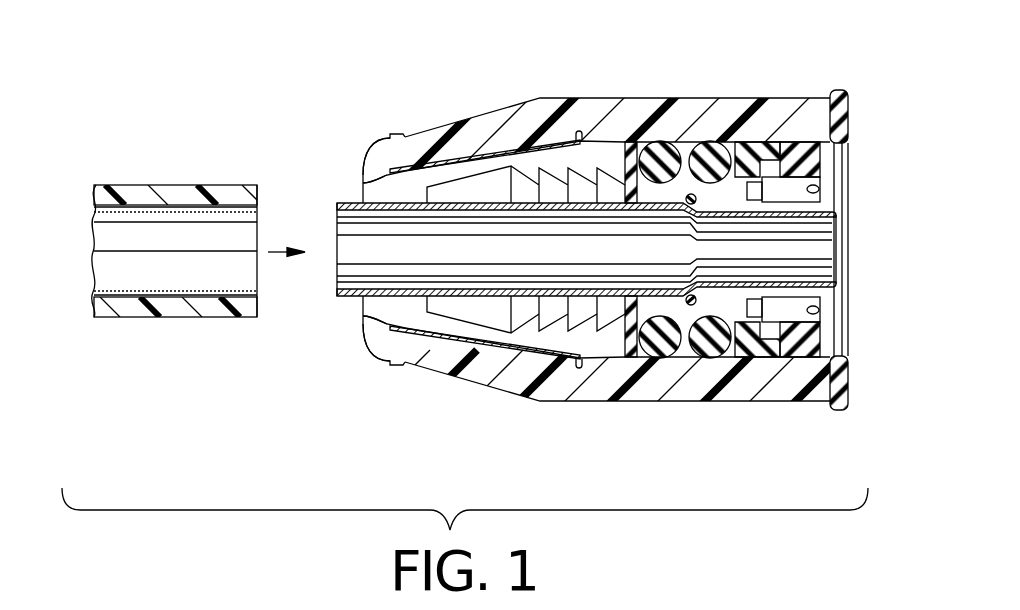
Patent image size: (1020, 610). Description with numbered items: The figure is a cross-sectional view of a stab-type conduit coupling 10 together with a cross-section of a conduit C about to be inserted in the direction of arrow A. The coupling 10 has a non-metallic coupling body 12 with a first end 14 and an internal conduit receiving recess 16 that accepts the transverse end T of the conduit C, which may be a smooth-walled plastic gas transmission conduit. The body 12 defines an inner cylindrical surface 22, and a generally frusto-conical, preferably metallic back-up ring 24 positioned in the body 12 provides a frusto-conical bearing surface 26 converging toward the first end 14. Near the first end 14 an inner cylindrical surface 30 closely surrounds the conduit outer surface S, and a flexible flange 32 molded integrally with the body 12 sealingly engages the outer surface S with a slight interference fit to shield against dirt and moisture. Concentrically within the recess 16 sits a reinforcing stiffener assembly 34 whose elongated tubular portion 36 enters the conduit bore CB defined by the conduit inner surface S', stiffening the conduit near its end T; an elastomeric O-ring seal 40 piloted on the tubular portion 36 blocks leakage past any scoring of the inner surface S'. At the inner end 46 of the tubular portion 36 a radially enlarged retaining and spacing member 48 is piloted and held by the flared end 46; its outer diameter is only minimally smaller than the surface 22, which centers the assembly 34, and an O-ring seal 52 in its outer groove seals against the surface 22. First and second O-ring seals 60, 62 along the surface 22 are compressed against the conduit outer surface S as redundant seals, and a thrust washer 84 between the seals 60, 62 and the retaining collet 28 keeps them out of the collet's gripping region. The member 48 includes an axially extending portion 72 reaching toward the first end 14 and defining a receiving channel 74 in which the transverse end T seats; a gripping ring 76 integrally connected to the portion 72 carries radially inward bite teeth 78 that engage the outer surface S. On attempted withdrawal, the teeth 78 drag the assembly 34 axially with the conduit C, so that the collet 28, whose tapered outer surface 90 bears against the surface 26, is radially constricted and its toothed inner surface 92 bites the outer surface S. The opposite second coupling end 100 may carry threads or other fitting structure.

The conduit coupling 10 is at (606, 237).
The coupling body 12 is at (610, 98).
The first end 14 is at (399, 114).
The conduit receiving recess 16 is at (393, 192).
The inner cylindrical surface 22 is at (671, 252).
The back-up ring 24 is at (545, 368).
The frusto-conical bearing surface 26 is at (472, 170).
The retaining collet 28 is at (593, 147).
The inner cylindrical surface 30 is at (388, 326).
The flexible flange 32 is at (367, 174).
The reinforcing stiffener assembly 34 is at (857, 166).
The tubular portion 36 is at (345, 257).
The O-ring seal 40 is at (697, 210).
The inner end 46 is at (850, 258).
The retaining and spacing member 48 is at (859, 297).
The O-ring seal 52 is at (776, 141).
The first O-ring seal 60 is at (658, 182).
The second O-ring seal 62 is at (700, 358).
The axially extending portion 72 is at (788, 316).
The receiving channel 74 is at (840, 200).
The gripping ring 76 is at (773, 352).
The bite teeth 78 is at (768, 202).
The thrust washer 84 is at (627, 160).
The tapered outer surface 90 is at (598, 372).
The toothed inner surface 92 is at (566, 298).
The second coupling end 100 is at (829, 426).
The conduit C is at (137, 165).
The conduit bore CB is at (178, 212).
The conduit outer surface S is at (177, 285).
The conduit inner surface S' is at (147, 237).
The transverse end T is at (274, 310).
The insertion arrow A is at (283, 250).